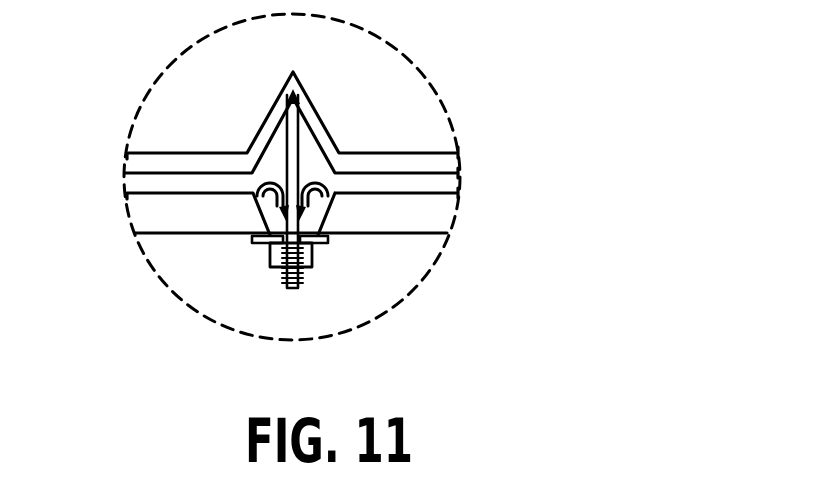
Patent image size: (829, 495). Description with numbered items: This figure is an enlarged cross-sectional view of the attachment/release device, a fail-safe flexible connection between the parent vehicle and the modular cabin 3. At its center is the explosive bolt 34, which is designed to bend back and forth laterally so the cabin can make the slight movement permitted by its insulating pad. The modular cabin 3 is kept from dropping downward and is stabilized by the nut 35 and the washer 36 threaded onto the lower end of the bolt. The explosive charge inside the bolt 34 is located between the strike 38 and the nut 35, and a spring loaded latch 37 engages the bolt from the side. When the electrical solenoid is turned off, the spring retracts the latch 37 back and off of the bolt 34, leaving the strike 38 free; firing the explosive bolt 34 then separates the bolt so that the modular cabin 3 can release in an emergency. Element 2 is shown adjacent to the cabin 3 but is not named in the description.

The upper roof panel 2 is at (425, 160).
The modular cabin 3 is at (410, 218).
The explosive bolt 34 is at (290, 167).
The nut 35 is at (270, 248).
The washer 36 is at (262, 242).
The spring loaded latch 37 is at (313, 185).
The strike 38 is at (303, 225).